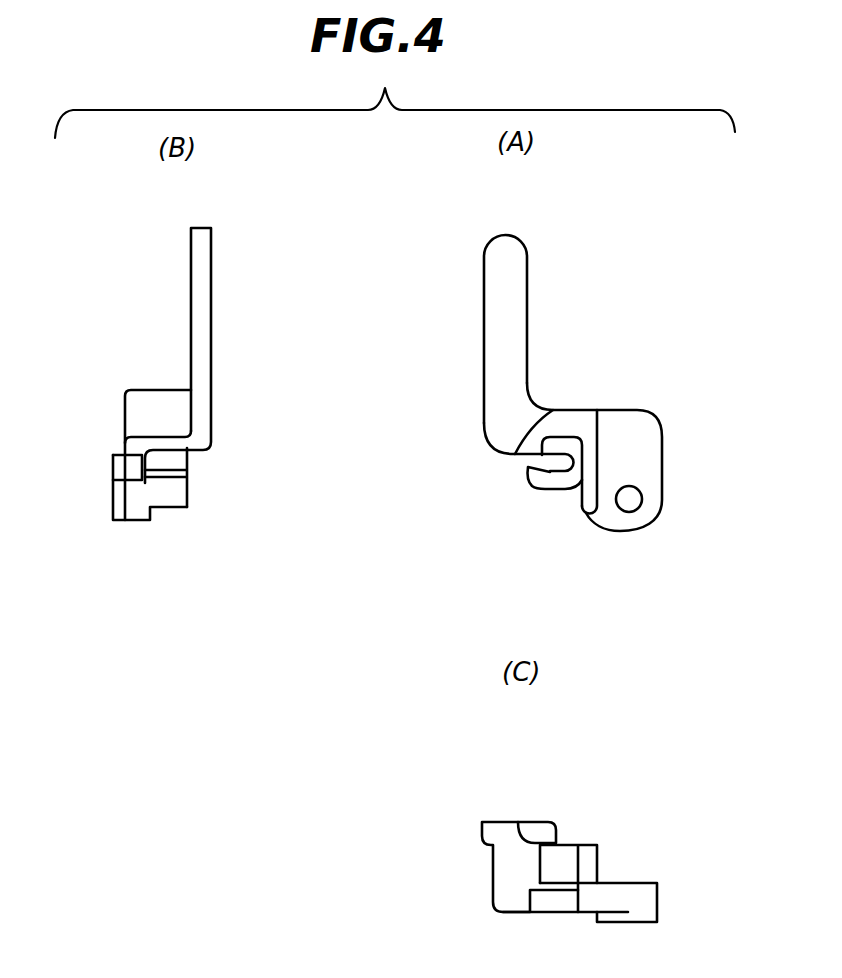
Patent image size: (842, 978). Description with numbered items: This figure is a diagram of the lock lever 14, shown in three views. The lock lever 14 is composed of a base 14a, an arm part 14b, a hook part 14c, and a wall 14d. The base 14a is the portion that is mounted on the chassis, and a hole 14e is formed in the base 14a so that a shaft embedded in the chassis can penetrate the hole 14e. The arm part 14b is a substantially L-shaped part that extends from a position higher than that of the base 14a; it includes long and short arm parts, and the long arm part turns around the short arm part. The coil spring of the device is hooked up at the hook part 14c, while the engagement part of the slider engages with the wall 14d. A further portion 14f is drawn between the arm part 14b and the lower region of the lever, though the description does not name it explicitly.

The hook member 14 is at (122, 222).
The base portion of hook member 14a is at (122, 521).
The upright arm of hook member 14b is at (208, 297).
The engaging claw of hook member 14c is at (132, 465).
The slot of hook member 14d is at (182, 462).
The hole of hook member 14e is at (635, 503).
The bent portion of hook member 14f is at (204, 398).